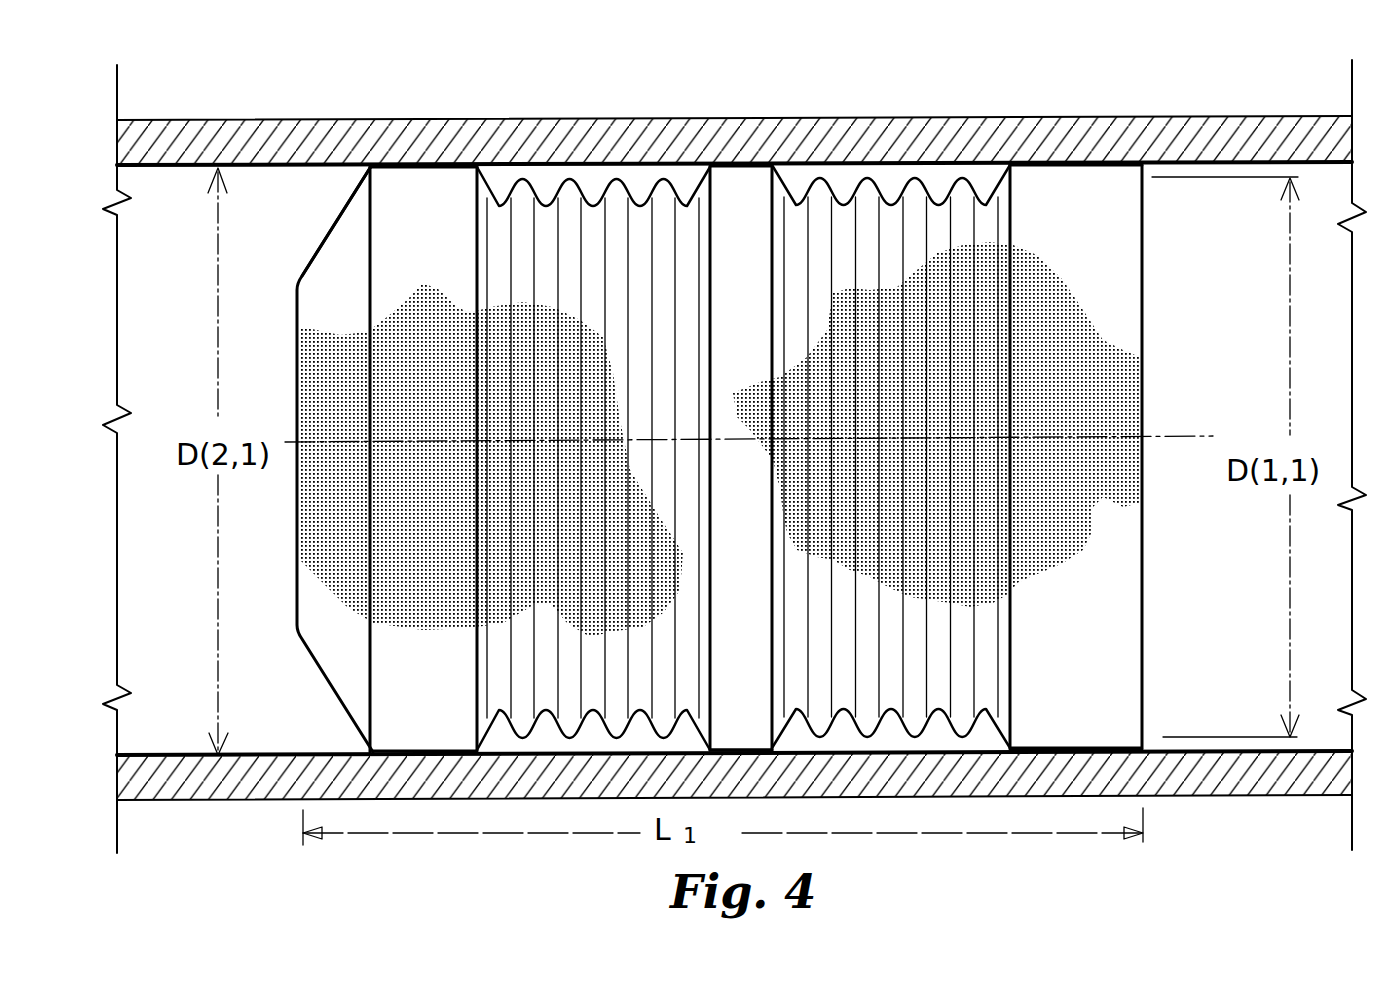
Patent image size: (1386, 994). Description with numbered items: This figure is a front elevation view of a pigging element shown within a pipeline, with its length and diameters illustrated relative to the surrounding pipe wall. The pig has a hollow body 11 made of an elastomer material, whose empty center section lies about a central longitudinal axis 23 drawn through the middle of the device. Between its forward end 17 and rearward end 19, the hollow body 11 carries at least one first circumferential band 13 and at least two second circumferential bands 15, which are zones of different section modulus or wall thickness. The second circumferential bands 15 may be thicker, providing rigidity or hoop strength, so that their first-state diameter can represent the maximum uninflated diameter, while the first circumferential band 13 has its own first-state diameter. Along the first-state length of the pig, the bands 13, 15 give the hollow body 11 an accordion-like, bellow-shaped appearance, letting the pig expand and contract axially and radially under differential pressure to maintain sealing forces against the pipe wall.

The hollow body 11 is at (342, 213).
The first circumferential band 13 is at (847, 222).
The second circumferential band 15 is at (737, 190).
The forward end 17 is at (297, 327).
The rearward end 19 is at (1147, 357).
The central longitudinal axis 23 is at (1178, 435).